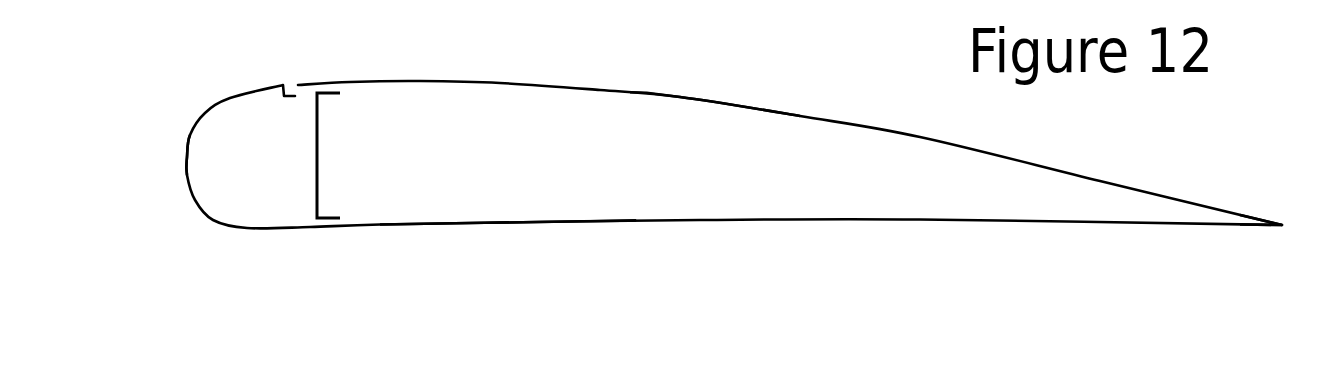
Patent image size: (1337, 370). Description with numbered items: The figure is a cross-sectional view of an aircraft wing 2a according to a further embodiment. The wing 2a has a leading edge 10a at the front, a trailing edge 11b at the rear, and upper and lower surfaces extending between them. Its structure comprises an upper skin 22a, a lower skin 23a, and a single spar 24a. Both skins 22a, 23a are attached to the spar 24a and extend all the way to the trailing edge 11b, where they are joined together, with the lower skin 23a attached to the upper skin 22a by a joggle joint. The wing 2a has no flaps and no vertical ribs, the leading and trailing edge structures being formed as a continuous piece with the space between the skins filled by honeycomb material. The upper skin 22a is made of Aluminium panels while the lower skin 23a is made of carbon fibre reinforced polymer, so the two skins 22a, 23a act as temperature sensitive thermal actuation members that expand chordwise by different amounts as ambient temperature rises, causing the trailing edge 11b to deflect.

The wing 2a is at (830, 92).
The leading edge 10a is at (187, 163).
The trailing edge 11b is at (1283, 226).
The upper skin 22a is at (678, 97).
The lower skin 23a is at (537, 222).
The spar 24a is at (318, 147).